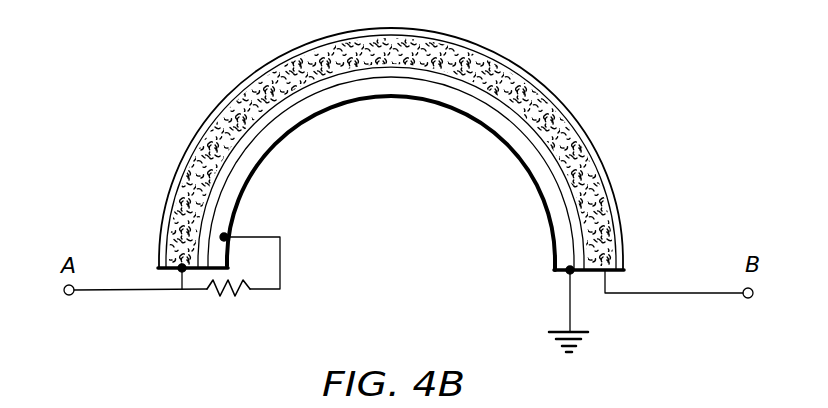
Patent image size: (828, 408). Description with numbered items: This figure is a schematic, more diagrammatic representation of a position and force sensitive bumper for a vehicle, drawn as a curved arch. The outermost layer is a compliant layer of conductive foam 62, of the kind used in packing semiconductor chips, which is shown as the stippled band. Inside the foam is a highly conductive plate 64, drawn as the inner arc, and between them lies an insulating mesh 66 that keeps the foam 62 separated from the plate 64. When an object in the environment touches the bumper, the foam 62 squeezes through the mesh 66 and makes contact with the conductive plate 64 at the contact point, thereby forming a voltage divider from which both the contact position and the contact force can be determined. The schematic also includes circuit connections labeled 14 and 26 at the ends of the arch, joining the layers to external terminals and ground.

The resistive heating element 14 is at (468, 102).
The resistor 26 is at (236, 290).
The conductive foam 62 is at (552, 120).
The conductive plate 64 is at (295, 113).
The insulating mesh 66 is at (247, 137).